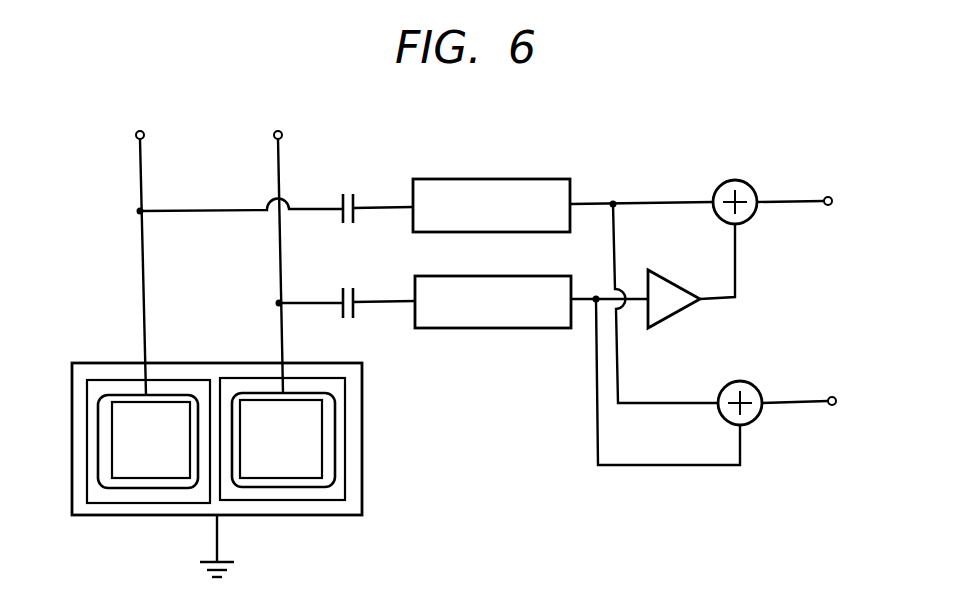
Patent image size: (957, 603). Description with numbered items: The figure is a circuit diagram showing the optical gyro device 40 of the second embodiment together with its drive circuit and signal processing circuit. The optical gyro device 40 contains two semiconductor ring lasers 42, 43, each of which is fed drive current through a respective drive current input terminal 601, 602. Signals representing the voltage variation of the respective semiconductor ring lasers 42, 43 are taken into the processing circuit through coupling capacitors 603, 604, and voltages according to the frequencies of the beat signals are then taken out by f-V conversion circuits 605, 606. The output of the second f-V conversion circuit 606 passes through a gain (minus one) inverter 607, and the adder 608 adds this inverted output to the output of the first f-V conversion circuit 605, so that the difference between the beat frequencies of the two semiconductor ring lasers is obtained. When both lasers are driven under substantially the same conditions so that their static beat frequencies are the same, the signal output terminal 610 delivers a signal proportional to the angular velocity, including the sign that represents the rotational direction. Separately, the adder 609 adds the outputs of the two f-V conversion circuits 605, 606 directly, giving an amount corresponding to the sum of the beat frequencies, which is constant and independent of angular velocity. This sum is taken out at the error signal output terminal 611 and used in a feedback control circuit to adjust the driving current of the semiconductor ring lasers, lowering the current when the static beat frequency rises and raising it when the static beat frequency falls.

The optical gyro device 40 is at (363, 375).
The semiconductor ring laser 42 is at (165, 395).
The semiconductor ring laser 43 is at (305, 393).
The drive current input terminal 601 is at (142, 131).
The drive current input terminal 602 is at (279, 131).
The coupling capacitor 603 is at (348, 194).
The coupling capacitor 604 is at (348, 289).
The f-V conversion circuit 605 is at (521, 180).
The f-V conversion circuit 606 is at (522, 276).
The gain (−1) inverter 607 is at (697, 272).
The adder 608 is at (738, 181).
The adder 609 is at (743, 382).
The signal output terminal 610 is at (832, 196).
The error signal output terminal 611 is at (834, 396).